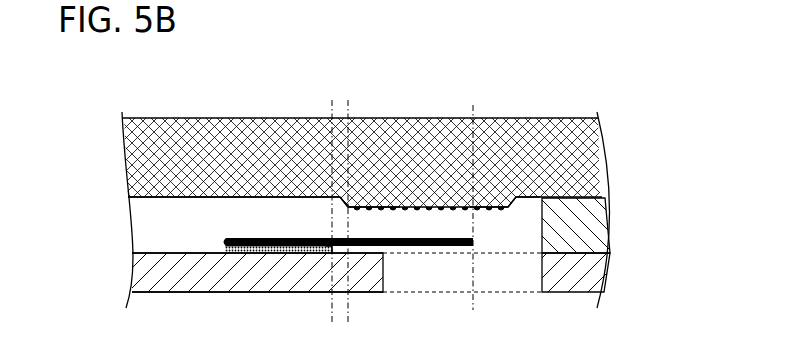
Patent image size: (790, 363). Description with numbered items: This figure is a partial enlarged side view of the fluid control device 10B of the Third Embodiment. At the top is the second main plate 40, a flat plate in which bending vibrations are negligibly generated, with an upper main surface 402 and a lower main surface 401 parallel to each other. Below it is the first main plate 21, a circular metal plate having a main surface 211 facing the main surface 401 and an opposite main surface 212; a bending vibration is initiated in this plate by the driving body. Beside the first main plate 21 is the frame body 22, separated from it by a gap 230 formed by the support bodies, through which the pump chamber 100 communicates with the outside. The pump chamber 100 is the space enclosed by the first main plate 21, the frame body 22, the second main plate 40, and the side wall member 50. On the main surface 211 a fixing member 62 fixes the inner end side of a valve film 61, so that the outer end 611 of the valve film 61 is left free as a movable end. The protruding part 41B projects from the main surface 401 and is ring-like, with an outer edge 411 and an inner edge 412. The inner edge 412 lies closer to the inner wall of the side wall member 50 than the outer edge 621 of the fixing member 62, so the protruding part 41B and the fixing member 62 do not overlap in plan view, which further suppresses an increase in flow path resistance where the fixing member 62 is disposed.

The fluid control device 10B is at (578, 103).
The second main plate 40 is at (590, 155).
The main surface 402 is at (138, 117).
The main surface 401 is at (148, 196).
The protruding part 41B is at (437, 200).
The inner edge 412 is at (340, 197).
The outer edge 411 is at (518, 198).
The pump chamber 100 is at (213, 213).
The side wall member 50 is at (600, 223).
The frame body 22 is at (600, 273).
The first main plate 21 is at (145, 277).
The main surface 211 is at (150, 252).
The main surface 212 is at (150, 294).
The gap 230 is at (523, 278).
The fixing member 62 is at (271, 246).
The outer edge 621 is at (331, 252).
The valve film 61 is at (422, 246).
The outer end 611 is at (476, 246).